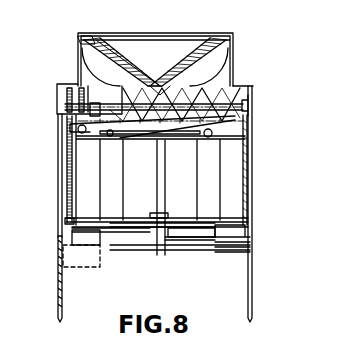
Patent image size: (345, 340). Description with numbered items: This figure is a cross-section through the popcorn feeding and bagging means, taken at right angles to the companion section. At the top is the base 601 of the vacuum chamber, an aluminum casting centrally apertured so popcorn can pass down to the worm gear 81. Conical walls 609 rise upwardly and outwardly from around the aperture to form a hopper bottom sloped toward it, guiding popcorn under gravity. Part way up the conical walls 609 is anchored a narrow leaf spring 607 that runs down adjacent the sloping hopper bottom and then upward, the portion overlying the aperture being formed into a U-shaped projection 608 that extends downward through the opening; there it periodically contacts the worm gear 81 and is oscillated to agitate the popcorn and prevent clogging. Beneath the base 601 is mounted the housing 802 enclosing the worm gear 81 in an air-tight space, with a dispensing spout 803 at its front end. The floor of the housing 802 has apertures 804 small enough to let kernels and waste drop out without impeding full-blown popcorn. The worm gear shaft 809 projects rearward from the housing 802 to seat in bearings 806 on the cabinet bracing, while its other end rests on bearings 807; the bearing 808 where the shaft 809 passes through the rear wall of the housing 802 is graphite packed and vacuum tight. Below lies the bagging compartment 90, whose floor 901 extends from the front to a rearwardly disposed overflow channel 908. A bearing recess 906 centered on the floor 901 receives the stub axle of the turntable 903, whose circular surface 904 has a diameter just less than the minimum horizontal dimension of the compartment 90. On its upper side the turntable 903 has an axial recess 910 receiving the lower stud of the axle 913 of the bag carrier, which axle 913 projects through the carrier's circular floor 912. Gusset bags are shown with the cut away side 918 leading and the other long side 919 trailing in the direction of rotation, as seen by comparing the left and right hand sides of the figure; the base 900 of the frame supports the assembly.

The worm gear 81 is at (214, 105).
The bagging compartment 90 is at (257, 188).
The base 601 is at (192, 113).
The leaf spring 607 is at (178, 80).
The U-shaped projection 608 is at (137, 70).
The conical walls 609 is at (203, 38).
The housing 802 is at (150, 150).
The dispensing spout 803 is at (255, 118).
The apertures 804 is at (200, 106).
The bearings 806 is at (66, 107).
The bearings 807 is at (249, 94).
The bearing 808 is at (78, 129).
The worm gear shaft 809 is at (105, 107).
The base 900 is at (31, 239).
The bagging compartment floor 901 is at (105, 242).
The turntable 903 is at (228, 247).
The circular surface 904 is at (31, 175).
The bearing recess 906 is at (155, 242).
The overflow channel 908 is at (90, 262).
The axial recess 910 is at (161, 200).
The circular floor 912 is at (248, 228).
The axle 913 is at (166, 198).
The cut away side 918 is at (87, 150).
The long side 919 is at (238, 155).